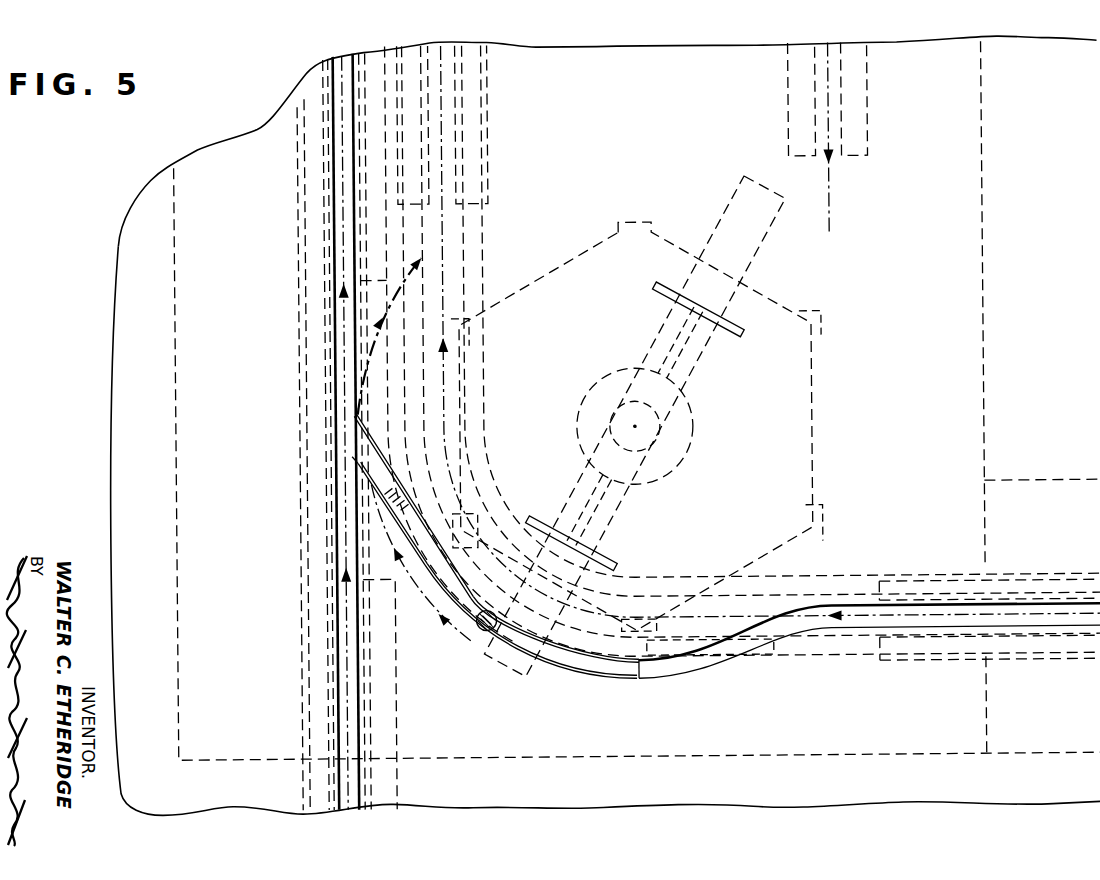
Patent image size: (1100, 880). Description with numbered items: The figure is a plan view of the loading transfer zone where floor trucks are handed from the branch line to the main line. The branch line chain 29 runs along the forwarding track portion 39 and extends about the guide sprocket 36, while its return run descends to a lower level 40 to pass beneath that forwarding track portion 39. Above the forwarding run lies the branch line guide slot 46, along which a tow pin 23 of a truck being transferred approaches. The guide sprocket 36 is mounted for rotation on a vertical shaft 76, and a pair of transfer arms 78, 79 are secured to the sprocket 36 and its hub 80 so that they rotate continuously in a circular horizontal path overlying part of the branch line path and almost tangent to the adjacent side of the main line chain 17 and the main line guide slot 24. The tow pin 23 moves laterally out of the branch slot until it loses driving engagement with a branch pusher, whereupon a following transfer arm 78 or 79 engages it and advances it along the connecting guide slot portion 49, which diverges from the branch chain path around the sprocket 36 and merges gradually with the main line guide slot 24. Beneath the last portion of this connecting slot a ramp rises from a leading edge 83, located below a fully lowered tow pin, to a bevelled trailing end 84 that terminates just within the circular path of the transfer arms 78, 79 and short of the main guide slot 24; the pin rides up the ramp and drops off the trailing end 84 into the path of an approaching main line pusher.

The endless propelling chain 17 is at (347, 328).
The tow pin 23 is at (487, 632).
The main line guide slot 24 is at (336, 666).
The branch line chain 29 is at (445, 233).
The guide sprocket 36 is at (820, 468).
The forwarding track portion 39 is at (905, 662).
The lower level 40 is at (869, 152).
The branch line guide slot 46 is at (1013, 620).
The connecting guide slot portion 49 is at (462, 598).
The vertical shaft 76 is at (640, 432).
The transfer arm 78 is at (532, 656).
The transfer arm 79 is at (764, 268).
The hub 80 is at (694, 423).
The leading edge 83 is at (640, 678).
The trailing end 84 is at (362, 443).